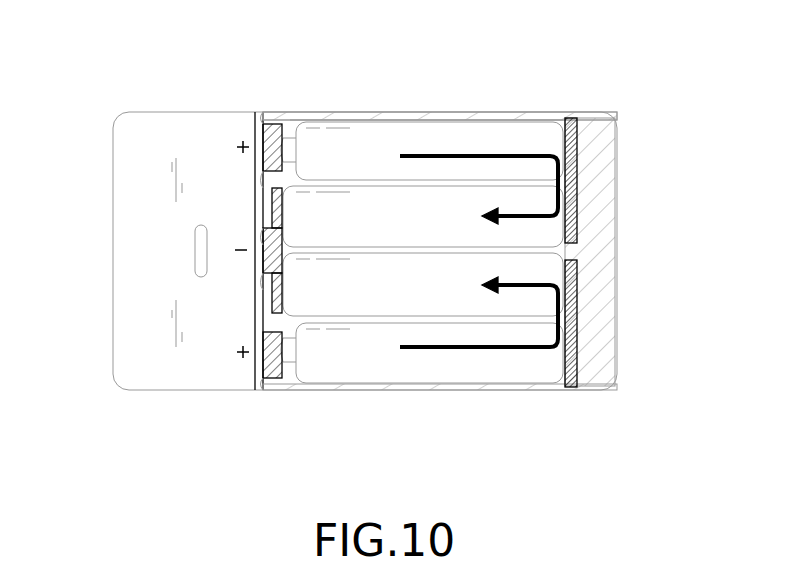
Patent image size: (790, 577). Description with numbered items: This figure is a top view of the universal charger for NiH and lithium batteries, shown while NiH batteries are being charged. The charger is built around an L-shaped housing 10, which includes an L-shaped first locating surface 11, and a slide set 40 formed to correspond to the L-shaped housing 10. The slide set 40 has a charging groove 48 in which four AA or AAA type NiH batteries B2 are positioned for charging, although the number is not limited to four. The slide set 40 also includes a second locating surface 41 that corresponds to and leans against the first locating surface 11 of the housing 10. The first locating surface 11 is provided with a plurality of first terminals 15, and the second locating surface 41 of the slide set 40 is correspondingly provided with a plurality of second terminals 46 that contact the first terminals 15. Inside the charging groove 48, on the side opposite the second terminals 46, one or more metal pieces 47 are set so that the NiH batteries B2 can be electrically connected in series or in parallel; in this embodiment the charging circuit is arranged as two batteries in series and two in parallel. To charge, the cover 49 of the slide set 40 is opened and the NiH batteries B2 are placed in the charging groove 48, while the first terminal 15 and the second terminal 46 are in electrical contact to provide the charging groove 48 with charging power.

The housing 10 is at (130, 268).
The first locating surface 11 is at (262, 112).
The second locating surface 41 is at (440, 116).
The first terminal 15 is at (261, 357).
The slide set 40 is at (483, 391).
The second terminal 46 is at (272, 392).
The metal piece 47 is at (580, 192).
The charging groove 48 is at (432, 120).
The cover 49 is at (622, 163).
The NiH battery B2 is at (355, 138).